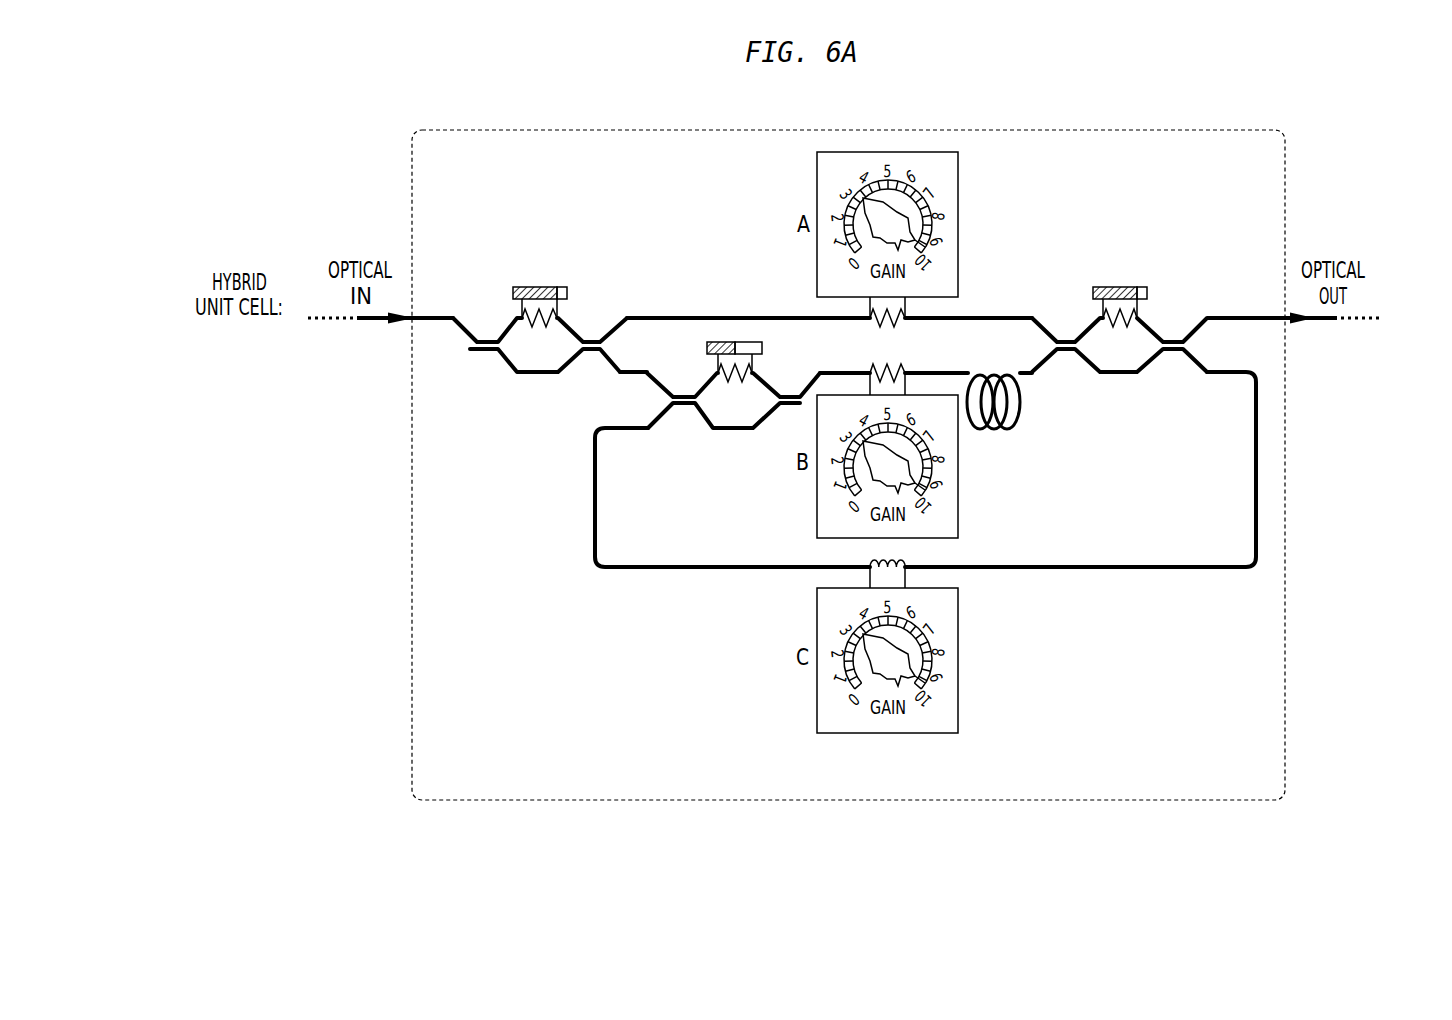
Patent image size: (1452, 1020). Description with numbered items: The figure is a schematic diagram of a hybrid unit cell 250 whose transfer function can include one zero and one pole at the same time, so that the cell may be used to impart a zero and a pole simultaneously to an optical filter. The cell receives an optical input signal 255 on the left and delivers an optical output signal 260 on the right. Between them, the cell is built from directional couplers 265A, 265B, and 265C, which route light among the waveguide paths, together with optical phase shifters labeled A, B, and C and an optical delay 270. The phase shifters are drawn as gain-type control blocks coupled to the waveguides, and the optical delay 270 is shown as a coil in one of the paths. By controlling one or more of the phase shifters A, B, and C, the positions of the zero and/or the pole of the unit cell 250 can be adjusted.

The unit cell 250 is at (1285, 450).
The optical input signal 255 is at (357, 320).
The optical output signal 260 is at (1305, 320).
The directional coupler 265A is at (518, 373).
The directional coupler 265B is at (710, 428).
The directional coupler 265C is at (1133, 373).
The optical delay 270 is at (1018, 426).